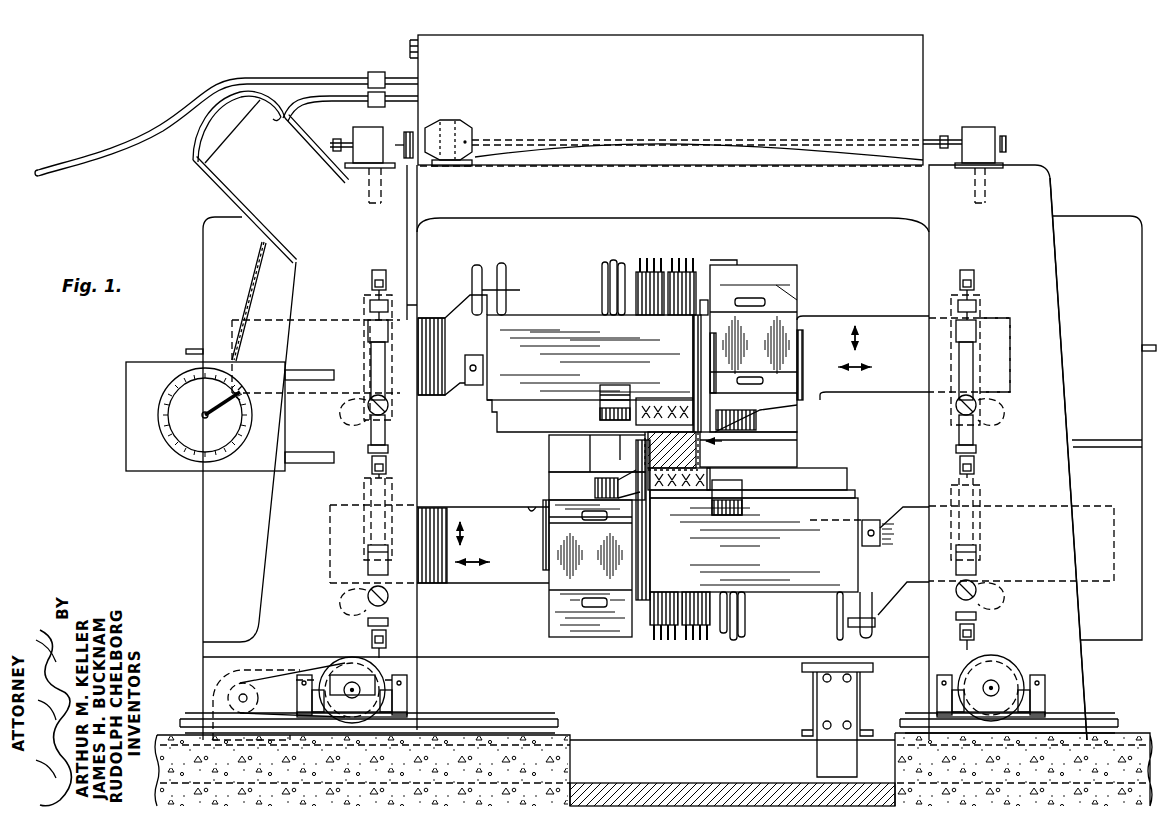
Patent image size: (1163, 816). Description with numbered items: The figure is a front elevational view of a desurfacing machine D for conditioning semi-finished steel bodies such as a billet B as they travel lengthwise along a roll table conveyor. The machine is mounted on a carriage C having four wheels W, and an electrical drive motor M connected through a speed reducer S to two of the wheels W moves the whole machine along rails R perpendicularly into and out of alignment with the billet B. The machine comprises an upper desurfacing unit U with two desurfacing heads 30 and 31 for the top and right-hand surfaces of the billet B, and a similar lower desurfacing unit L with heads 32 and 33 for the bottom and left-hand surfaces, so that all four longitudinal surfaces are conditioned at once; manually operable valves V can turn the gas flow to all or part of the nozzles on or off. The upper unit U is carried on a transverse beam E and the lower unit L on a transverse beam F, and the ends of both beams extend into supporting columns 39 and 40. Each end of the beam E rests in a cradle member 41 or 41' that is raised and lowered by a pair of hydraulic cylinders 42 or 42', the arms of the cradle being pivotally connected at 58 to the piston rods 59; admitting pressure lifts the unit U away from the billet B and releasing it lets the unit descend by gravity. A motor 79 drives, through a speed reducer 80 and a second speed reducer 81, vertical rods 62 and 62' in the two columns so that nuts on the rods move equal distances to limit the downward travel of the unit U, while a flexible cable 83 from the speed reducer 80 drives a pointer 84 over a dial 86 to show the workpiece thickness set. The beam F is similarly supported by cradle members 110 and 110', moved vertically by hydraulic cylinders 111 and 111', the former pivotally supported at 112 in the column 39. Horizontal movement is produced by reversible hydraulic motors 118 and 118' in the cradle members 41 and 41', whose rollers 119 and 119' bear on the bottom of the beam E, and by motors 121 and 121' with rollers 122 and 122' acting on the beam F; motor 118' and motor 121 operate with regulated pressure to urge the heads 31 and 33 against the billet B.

The desurfacing head 30 is at (652, 412).
The desurfacing head 31 is at (748, 460).
The desurfacing head 32 is at (680, 486).
The desurfacing head 33 is at (640, 460).
The supporting column 39 is at (266, 520).
The supporting column 40 is at (1058, 300).
The cradle member 41 is at (356, 357).
The hydraulic cylinders 42 is at (344, 373).
The cradle member 41' is at (987, 354).
The hydraulic cylinders 42' is at (1006, 355).
The pivotal connection 58 is at (379, 270).
The piston rod 59 is at (370, 310).
The vertical rod 62 is at (351, 191).
The vertical rod 62' is at (962, 187).
The motor 79 is at (470, 132).
The speed reducer 80 is at (363, 140).
The speed reducer 81 is at (978, 136).
The flexible cable 83 is at (248, 286).
The pointer 84 is at (220, 410).
The dial 86 is at (178, 437).
The cradle member 110 is at (413, 487).
The cradle member 110' is at (995, 487).
The hydraulic cylinders 111 is at (340, 560).
The hydraulic cylinders 111' is at (997, 559).
The pivotal support 112 is at (388, 640).
The reversible hydraulic fluid-operated motor 118 is at (332, 417).
The hydraulic motor 118' is at (1015, 427).
The roller 119 is at (410, 401).
The roller 119' is at (933, 408).
The reversible motor 121 is at (1021, 599).
The constant-torque motor 121' is at (328, 601).
The roller 122 is at (933, 598).
The roller 122' is at (363, 614).
The billet B is at (702, 452).
The carriage C is at (666, 744).
The desurfacing machine D is at (1058, 178).
The transverse beam E is at (874, 318).
The transverse beam F is at (482, 576).
The lower desurfacing unit L is at (536, 598).
The electrical drive motor M is at (395, 680).
The rails R is at (496, 713).
The speed reducer S is at (215, 678).
The upper desurfacing unit U is at (802, 280).
The valves V is at (680, 311).
The wheels W is at (345, 678).